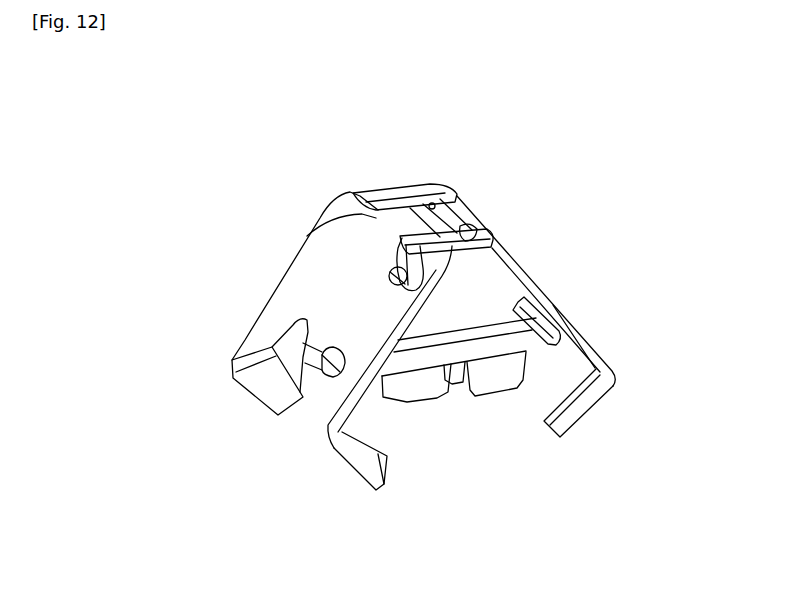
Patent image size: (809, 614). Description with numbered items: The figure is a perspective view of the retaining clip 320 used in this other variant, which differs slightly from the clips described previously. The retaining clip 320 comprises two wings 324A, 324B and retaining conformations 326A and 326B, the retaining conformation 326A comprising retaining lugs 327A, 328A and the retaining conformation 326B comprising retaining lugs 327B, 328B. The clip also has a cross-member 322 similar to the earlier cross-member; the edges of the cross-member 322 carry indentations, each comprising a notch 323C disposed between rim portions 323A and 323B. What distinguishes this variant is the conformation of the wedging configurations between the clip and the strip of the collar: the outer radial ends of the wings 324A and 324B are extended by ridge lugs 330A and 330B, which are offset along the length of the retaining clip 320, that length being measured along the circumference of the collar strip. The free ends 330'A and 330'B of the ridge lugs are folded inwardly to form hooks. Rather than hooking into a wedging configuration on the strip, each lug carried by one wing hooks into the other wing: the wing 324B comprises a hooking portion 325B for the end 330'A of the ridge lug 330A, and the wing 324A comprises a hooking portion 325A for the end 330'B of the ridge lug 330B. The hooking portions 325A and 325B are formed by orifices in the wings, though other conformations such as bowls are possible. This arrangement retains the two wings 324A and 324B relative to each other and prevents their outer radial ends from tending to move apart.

The retaining clip 320 is at (587, 155).
The cross-member 322 is at (506, 341).
The rim portion 323A is at (497, 378).
The rim portion 323B is at (413, 388).
The notch 323C is at (460, 385).
The wing 324A is at (552, 300).
The wing 324B is at (292, 258).
The hooking portion 325A is at (415, 192).
The hooking portion 325B is at (392, 268).
The retaining conformation 326A is at (620, 427).
The retaining conformation 326B is at (333, 493).
The retaining lug 327A is at (568, 426).
The retaining lug 327B is at (373, 457).
The retaining lug 328A is at (508, 326).
The retaining lug 328B is at (270, 393).
The ridge lug 330A is at (473, 226).
The ridge lug 330B is at (393, 190).
The free end of ridge lug 330'A is at (365, 306).
The free end of ridge lug 330'B is at (463, 178).